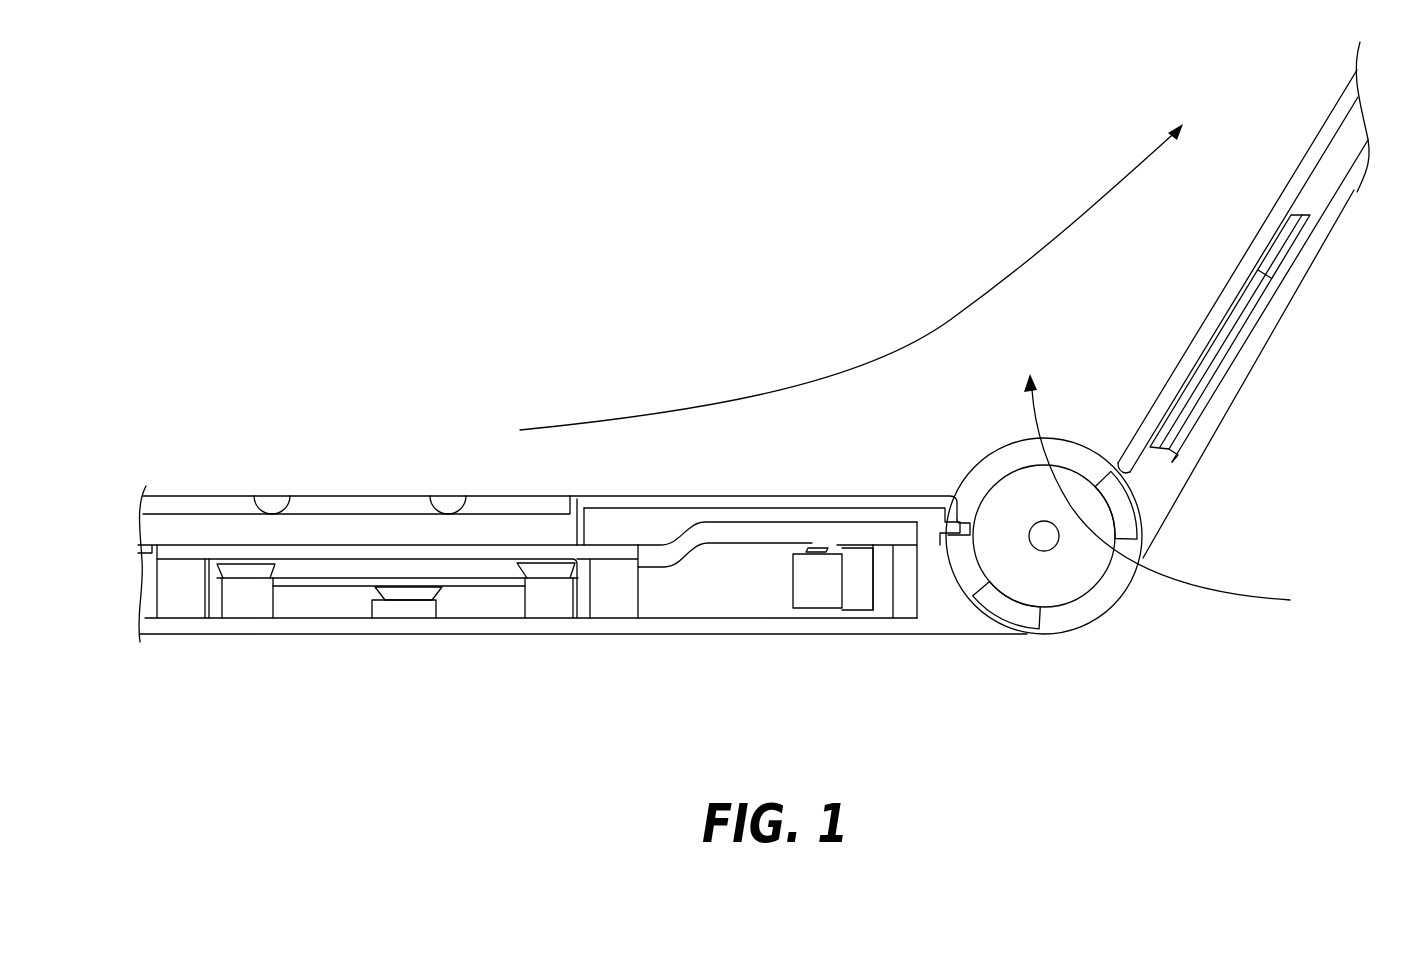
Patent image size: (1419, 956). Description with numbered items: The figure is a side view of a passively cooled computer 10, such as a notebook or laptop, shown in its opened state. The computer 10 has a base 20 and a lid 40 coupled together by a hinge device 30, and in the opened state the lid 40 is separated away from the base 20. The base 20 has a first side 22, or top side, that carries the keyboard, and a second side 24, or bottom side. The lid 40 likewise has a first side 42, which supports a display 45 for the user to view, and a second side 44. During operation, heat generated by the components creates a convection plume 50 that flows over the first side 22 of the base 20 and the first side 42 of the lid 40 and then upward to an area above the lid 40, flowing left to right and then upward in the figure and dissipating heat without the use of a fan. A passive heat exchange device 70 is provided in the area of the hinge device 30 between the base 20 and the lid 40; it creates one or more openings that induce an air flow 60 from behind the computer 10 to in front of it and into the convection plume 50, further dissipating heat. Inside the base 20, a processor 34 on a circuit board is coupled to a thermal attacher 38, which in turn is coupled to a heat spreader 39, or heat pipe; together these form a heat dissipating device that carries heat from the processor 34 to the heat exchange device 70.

The passively cooled computer 10 is at (760, 180).
The base 20 is at (342, 445).
The first side 22 is at (576, 500).
The second side 24 is at (553, 634).
The hinge device 30 is at (1015, 624).
The processor 34 is at (322, 580).
The thermal attacher 38 is at (178, 553).
The heat spreader 39 is at (722, 530).
The lid 40 is at (1252, 196).
The first side 42 is at (1232, 278).
The second side 44 is at (1285, 326).
The display 45 is at (1300, 165).
The convection plume 50 is at (790, 398).
The air flow 60 is at (1050, 465).
The passive heat exchange device 70 is at (1079, 590).